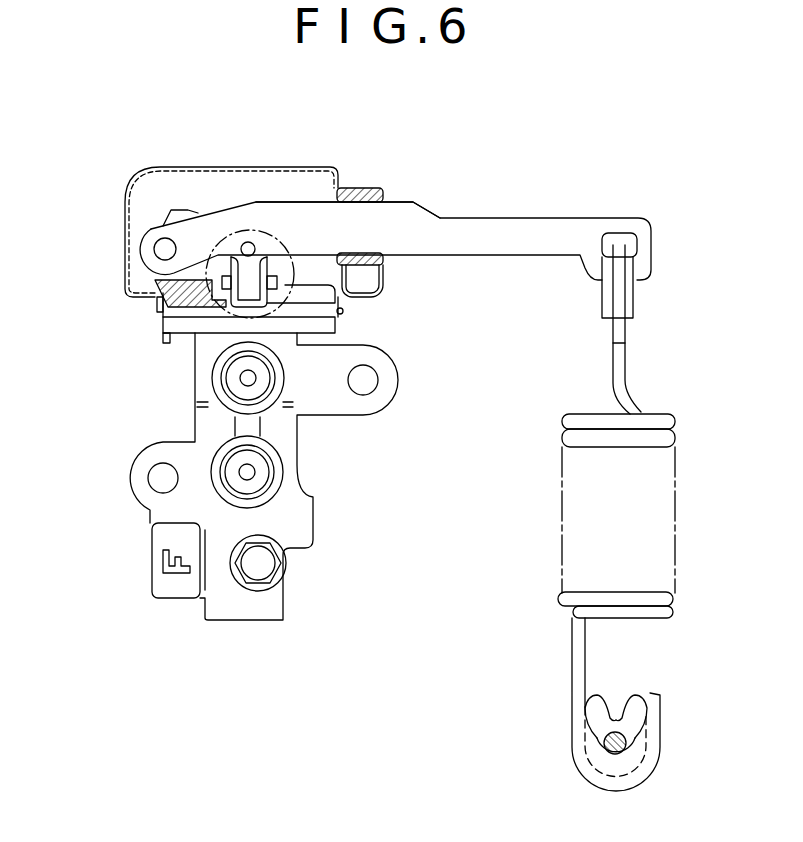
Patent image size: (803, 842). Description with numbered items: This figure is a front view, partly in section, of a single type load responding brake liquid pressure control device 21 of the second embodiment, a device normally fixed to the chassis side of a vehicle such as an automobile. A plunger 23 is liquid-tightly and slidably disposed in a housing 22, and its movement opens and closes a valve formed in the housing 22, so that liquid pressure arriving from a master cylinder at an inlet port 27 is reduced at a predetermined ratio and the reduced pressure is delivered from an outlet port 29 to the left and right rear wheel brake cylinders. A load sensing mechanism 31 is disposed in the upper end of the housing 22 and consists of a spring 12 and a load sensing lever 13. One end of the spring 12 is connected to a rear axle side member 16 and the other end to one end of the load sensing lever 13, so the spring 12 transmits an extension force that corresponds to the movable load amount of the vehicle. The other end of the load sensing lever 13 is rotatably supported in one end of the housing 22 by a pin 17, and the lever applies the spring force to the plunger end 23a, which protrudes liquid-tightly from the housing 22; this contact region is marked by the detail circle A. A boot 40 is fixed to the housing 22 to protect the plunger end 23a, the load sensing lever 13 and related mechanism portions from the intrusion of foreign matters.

The boot 40 is at (170, 167).
The detail region A is at (268, 228).
The load responding brake liquid pressure control device 21 is at (498, 172).
The load sensing mechanism 31 is at (408, 202).
The load sensing lever 13 is at (475, 247).
The spring 12 is at (668, 430).
The rear axle side member 16 is at (628, 742).
The pin 17 is at (154, 252).
The housing 22 is at (153, 300).
The plunger 23 is at (182, 333).
The plunger end 23a is at (249, 282).
The inlet port 27 is at (253, 378).
The outlet port 29 is at (253, 472).